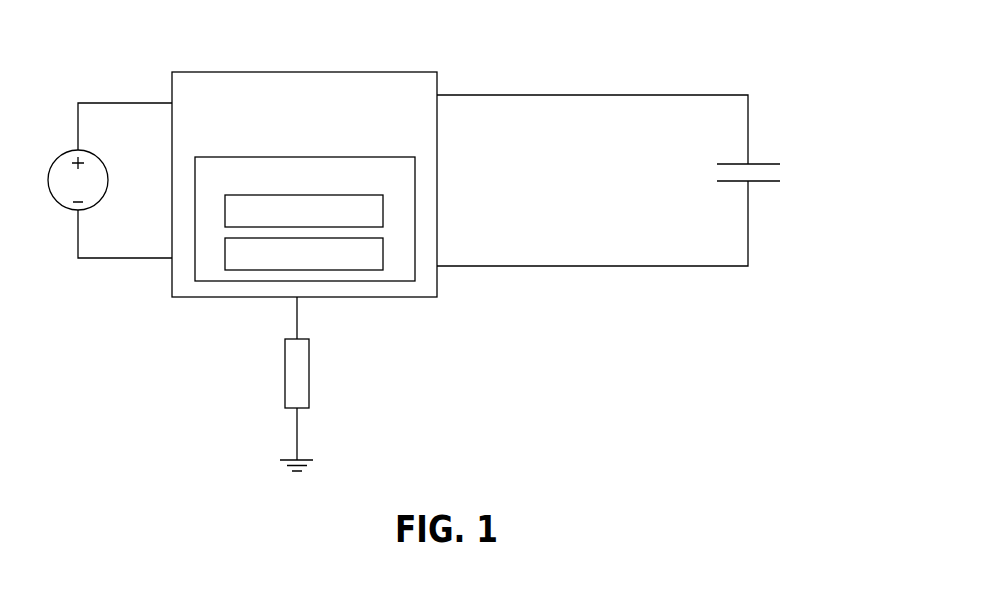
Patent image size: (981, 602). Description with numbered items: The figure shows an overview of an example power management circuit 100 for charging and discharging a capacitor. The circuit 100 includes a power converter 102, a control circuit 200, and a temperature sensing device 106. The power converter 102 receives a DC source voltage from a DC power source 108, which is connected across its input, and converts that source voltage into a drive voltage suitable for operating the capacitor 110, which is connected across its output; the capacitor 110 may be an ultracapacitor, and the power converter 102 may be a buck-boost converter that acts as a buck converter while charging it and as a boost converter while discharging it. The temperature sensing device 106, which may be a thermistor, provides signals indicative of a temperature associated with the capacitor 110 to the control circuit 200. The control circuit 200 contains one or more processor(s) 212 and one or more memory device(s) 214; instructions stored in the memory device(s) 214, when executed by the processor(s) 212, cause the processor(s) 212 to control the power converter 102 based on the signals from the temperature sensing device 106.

The power management circuit 100 is at (761, 44).
The power converter 102 is at (416, 72).
The temperature sensing device 106 is at (302, 376).
The DC power source 108 is at (52, 196).
The capacitor 110 is at (762, 164).
The control circuit 200 is at (367, 157).
The processor(s) 212 is at (383, 213).
The memory device(s) 214 is at (383, 252).